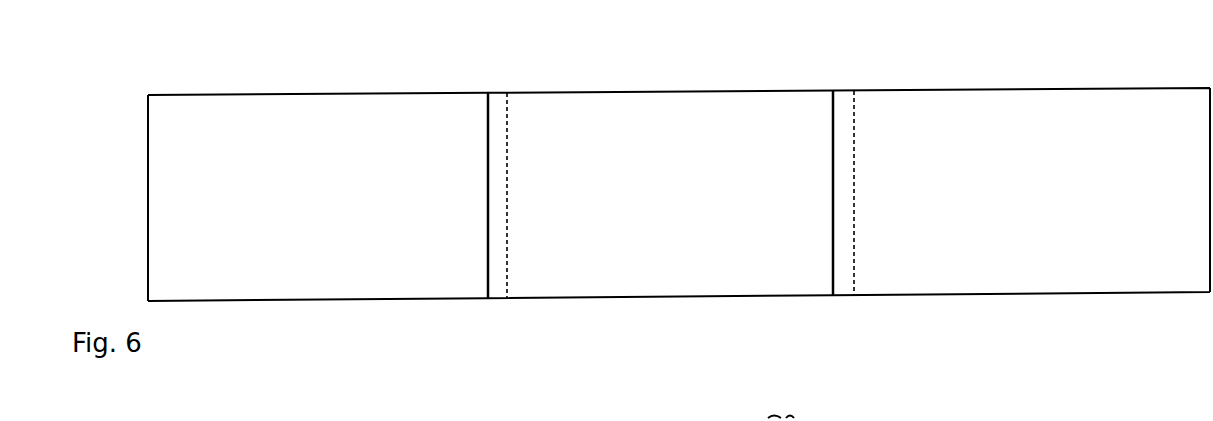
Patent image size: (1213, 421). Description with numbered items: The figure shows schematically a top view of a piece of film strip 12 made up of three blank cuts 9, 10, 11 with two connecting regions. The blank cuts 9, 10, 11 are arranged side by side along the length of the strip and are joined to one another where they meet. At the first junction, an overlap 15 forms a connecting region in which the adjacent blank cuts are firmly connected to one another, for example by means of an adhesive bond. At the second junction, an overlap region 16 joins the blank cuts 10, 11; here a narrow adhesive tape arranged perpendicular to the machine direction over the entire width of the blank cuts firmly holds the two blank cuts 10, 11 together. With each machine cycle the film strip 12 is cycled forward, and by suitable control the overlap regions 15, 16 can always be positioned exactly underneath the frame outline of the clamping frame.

The blank cut 9 is at (334, 270).
The blank cut 10 is at (682, 265).
The blank cut 11 is at (1032, 282).
The film strip 12 is at (679, 191).
The overlap 15 is at (511, 129).
The overlap region 16 is at (853, 136).